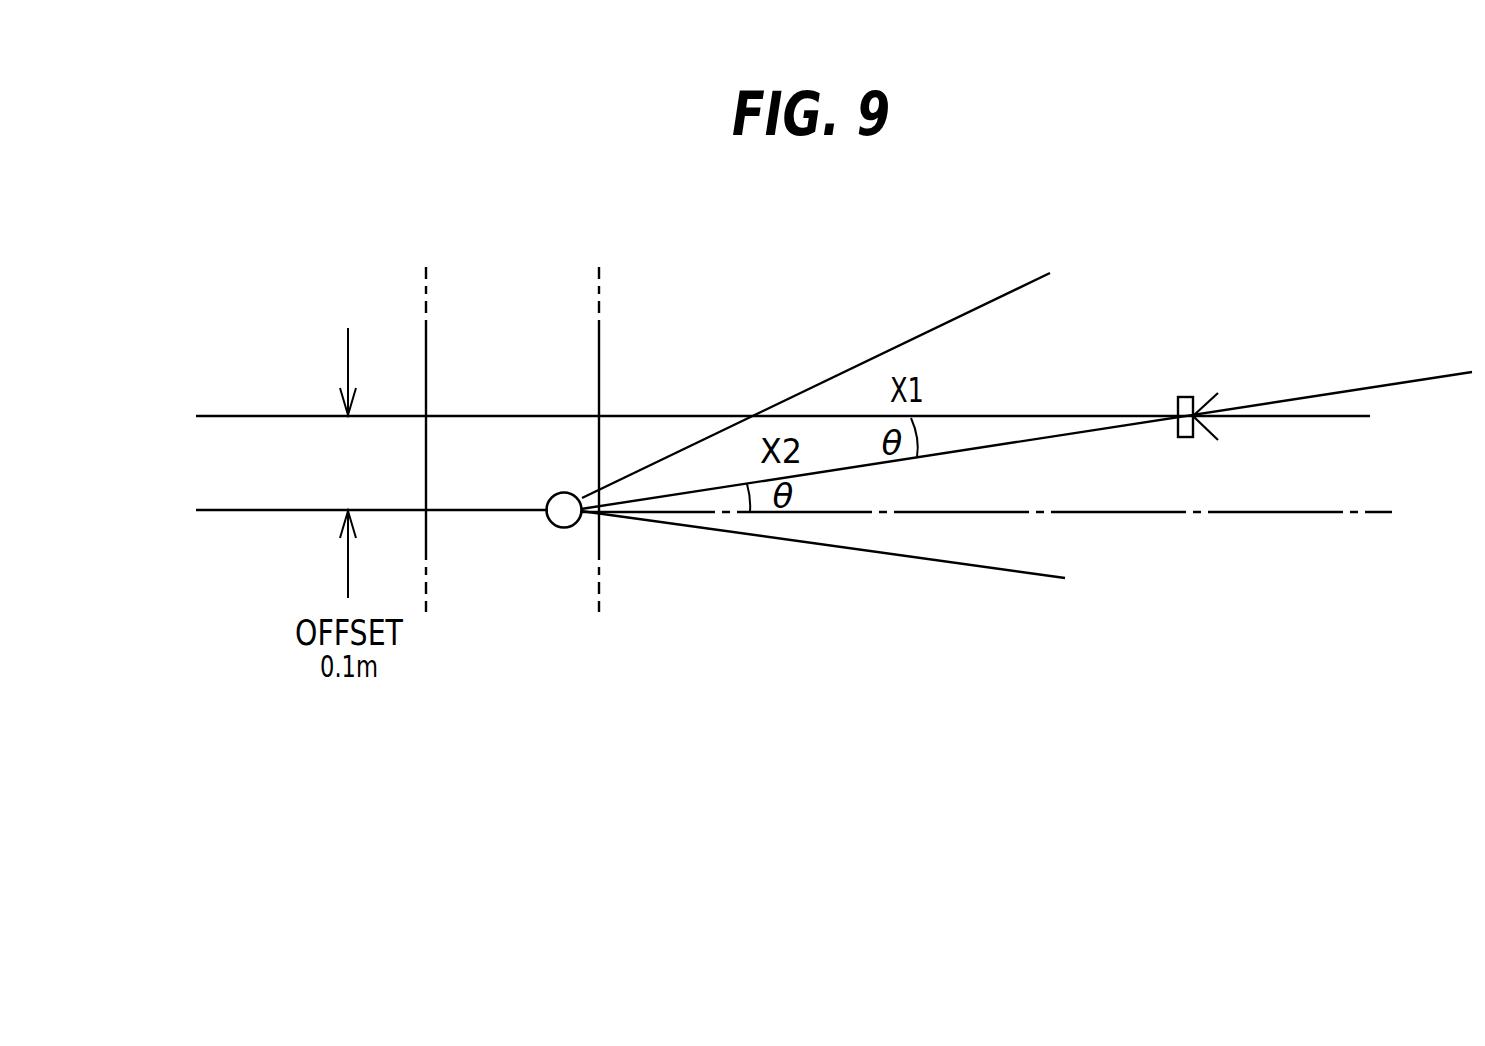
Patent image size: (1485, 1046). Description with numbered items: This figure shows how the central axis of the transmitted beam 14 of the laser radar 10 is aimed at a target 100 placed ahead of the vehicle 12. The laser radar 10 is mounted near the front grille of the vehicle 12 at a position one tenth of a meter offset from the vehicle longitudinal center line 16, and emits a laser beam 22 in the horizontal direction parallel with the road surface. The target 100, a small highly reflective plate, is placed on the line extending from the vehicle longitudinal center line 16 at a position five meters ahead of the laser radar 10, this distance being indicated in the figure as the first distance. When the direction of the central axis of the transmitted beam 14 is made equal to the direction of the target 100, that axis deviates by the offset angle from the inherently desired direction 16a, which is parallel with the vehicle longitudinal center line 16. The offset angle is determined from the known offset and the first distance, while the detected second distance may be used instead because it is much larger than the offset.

The laser radar 10 is at (564, 527).
The vehicle 12 is at (503, 395).
The central axis of the transmitted beam 14 is at (1293, 398).
The vehicle longitudinal center line 16 is at (1282, 418).
The inherently desired direction 16a is at (1115, 514).
The laser beam 22 is at (852, 367).
The target 100 is at (1182, 397).